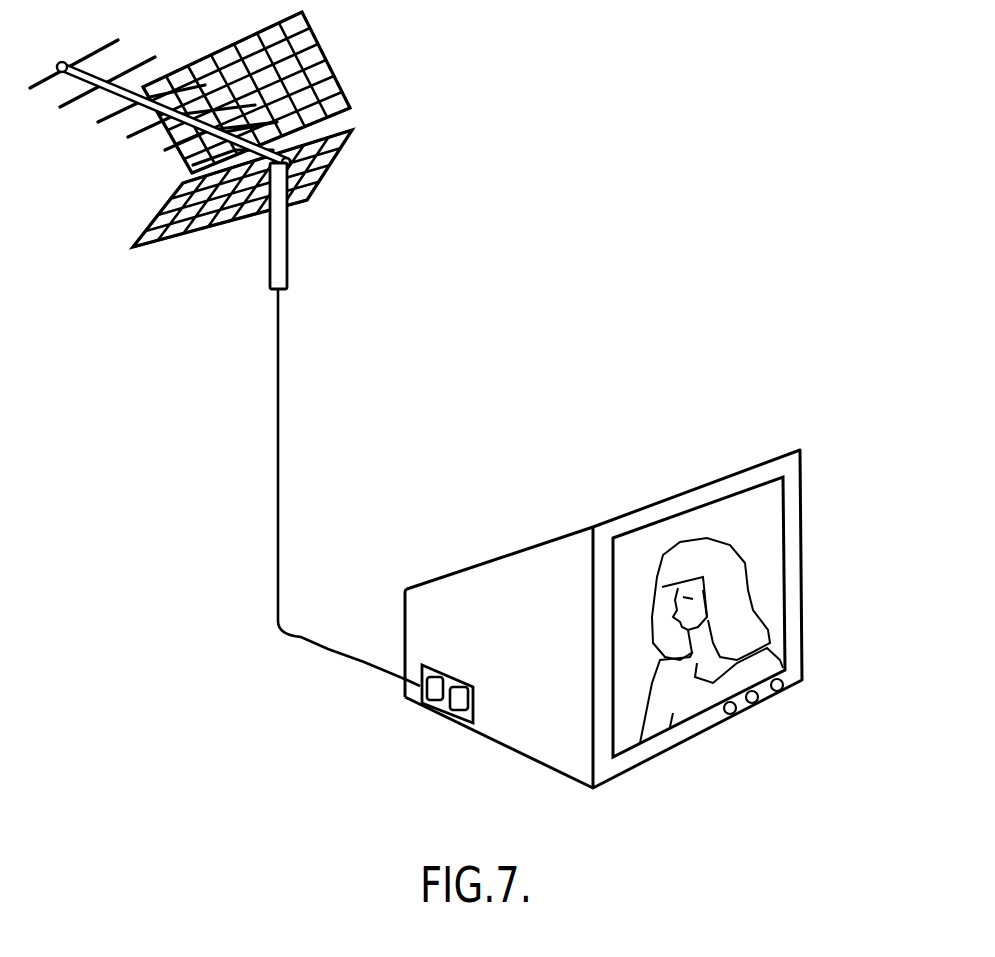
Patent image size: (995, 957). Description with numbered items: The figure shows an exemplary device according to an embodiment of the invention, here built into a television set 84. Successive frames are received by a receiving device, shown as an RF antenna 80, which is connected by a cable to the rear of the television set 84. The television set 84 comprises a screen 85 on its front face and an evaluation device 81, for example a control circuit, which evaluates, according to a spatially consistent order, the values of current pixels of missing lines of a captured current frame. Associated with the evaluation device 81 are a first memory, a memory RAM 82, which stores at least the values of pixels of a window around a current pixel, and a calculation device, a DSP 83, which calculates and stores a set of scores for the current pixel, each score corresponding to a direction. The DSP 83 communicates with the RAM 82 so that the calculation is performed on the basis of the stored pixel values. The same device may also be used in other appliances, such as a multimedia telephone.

The RF antenna 80 is at (362, 56).
The evaluation device 81 is at (403, 730).
The memory RAM 82 is at (436, 700).
The DSP 83 is at (458, 710).
The television set 84 is at (614, 587).
The screen 85 is at (785, 575).